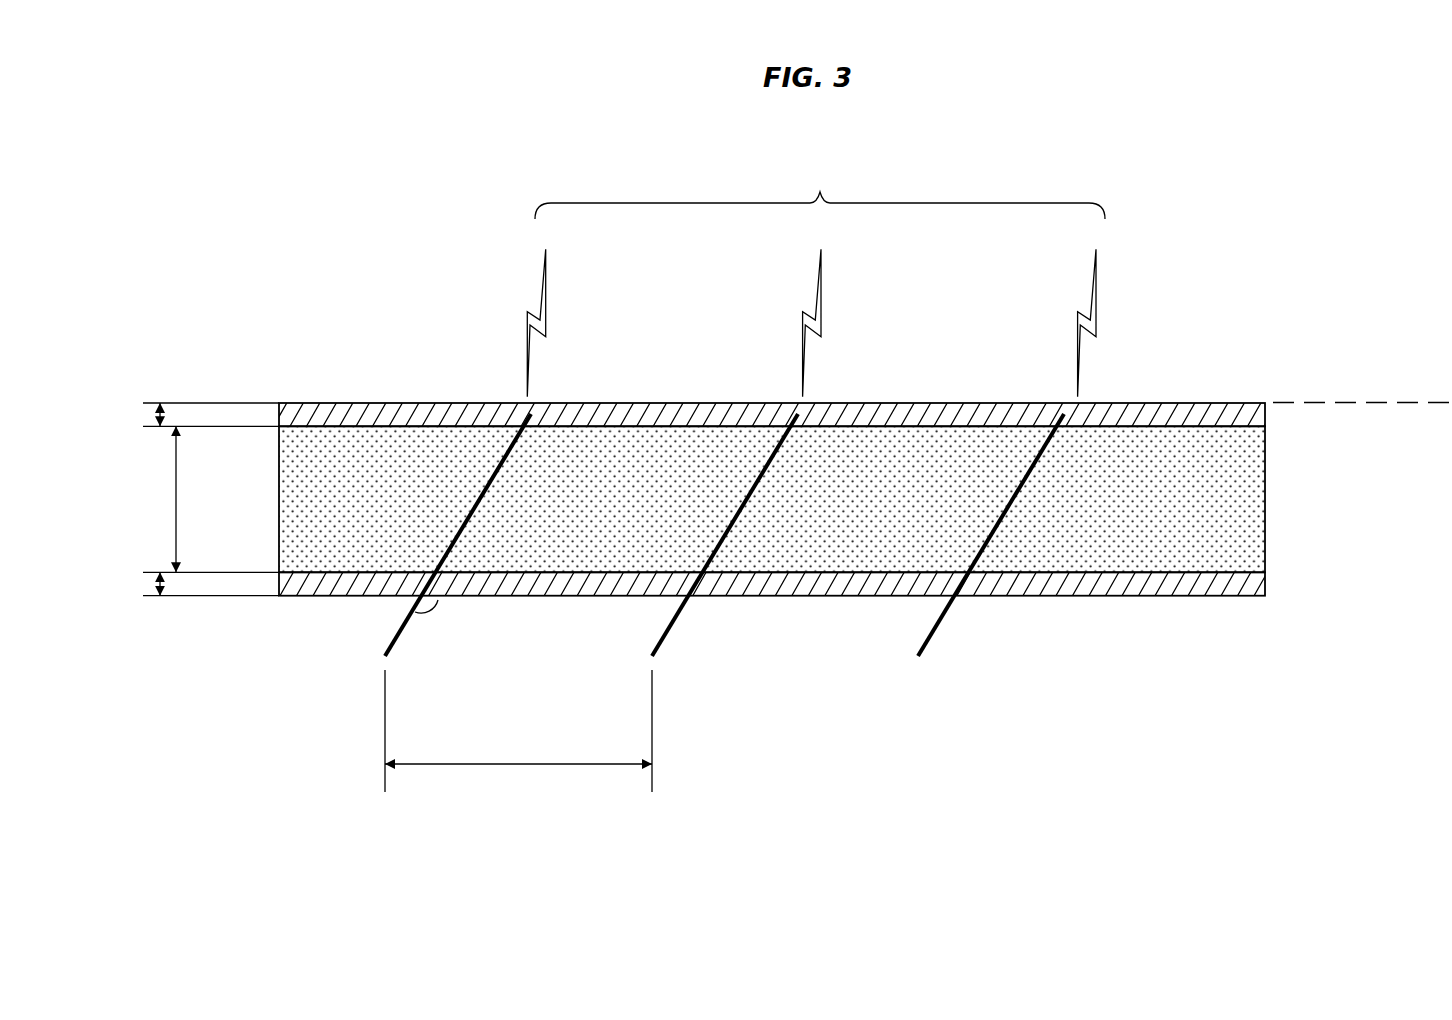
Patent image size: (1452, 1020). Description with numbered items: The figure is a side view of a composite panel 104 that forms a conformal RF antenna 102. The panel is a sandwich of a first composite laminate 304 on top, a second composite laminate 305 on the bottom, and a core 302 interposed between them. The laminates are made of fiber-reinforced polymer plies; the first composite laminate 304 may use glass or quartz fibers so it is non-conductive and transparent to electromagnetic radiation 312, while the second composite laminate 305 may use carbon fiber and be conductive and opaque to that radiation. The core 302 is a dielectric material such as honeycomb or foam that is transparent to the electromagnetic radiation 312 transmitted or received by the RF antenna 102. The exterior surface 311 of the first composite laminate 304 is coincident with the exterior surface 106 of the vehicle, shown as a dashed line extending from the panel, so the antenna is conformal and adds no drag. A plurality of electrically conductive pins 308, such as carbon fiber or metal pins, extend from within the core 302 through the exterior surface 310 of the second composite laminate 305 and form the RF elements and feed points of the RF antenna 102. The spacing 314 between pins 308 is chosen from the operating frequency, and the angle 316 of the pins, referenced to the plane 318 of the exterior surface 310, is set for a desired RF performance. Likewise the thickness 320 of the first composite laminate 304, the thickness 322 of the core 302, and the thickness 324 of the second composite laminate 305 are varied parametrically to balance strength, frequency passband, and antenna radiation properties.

The RF antenna 102 is at (820, 193).
The composite panel 104 is at (1178, 122).
The exterior surface of vehicle 106 is at (1383, 402).
The core 302 is at (297, 512).
The first composite laminate 304 is at (328, 403).
The second composite laminate 305 is at (330, 596).
The pins 308 is at (397, 632).
The exterior surface of second composite laminate 310 is at (848, 627).
The exterior surface of first composite laminate 311 is at (1192, 372).
The electromagnetic radiation 312 is at (527, 320).
The spacing 314 is at (502, 768).
The angle 316 is at (438, 600).
The plane 318 is at (210, 597).
The thickness of first composite laminate 320 is at (157, 413).
The thickness of core 322 is at (176, 495).
The thickness of second composite laminate 324 is at (157, 583).